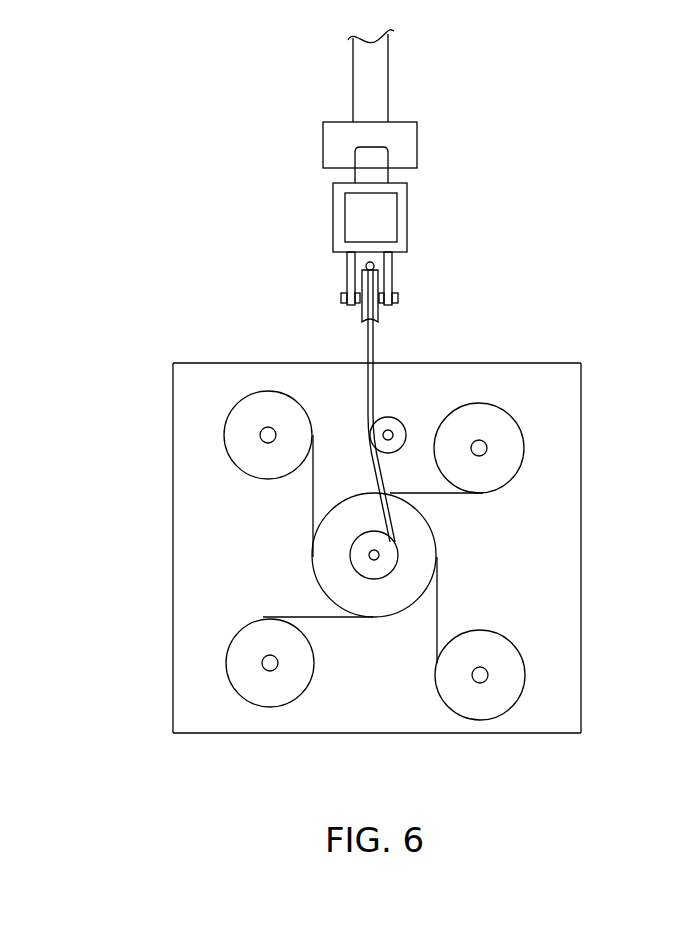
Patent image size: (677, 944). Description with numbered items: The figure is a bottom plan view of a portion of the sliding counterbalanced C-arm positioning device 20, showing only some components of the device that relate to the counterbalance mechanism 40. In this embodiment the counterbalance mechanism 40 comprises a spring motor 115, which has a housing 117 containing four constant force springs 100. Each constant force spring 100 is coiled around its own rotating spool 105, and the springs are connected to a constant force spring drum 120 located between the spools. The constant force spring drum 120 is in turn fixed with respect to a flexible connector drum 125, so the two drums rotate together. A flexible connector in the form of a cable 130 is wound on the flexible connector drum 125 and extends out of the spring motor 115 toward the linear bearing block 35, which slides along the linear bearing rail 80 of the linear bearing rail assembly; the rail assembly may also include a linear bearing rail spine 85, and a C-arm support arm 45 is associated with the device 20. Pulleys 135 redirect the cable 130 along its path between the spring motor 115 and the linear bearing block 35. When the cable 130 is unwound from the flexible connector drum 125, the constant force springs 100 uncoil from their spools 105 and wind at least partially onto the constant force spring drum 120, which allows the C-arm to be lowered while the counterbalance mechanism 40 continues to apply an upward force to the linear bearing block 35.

The sliding counterbalanced C-arm positioning device 20 is at (136, 218).
The C-arm support arm 45 is at (400, 90).
The linear bearing block 35 is at (403, 147).
The linear bearing rail 80 is at (387, 177).
The linear bearing rail spine 85 is at (402, 226).
The pulleys 135 is at (383, 312).
The cable 130 is at (356, 345).
The counterbalance mechanism 40 is at (160, 585).
The spring motor 115 is at (162, 398).
The housing 117 is at (173, 708).
The rotating spool 105 is at (236, 438).
The constant force springs 100 is at (313, 510).
The constant force spring drum 120 is at (306, 587).
The flexible connector drum 125 is at (373, 568).